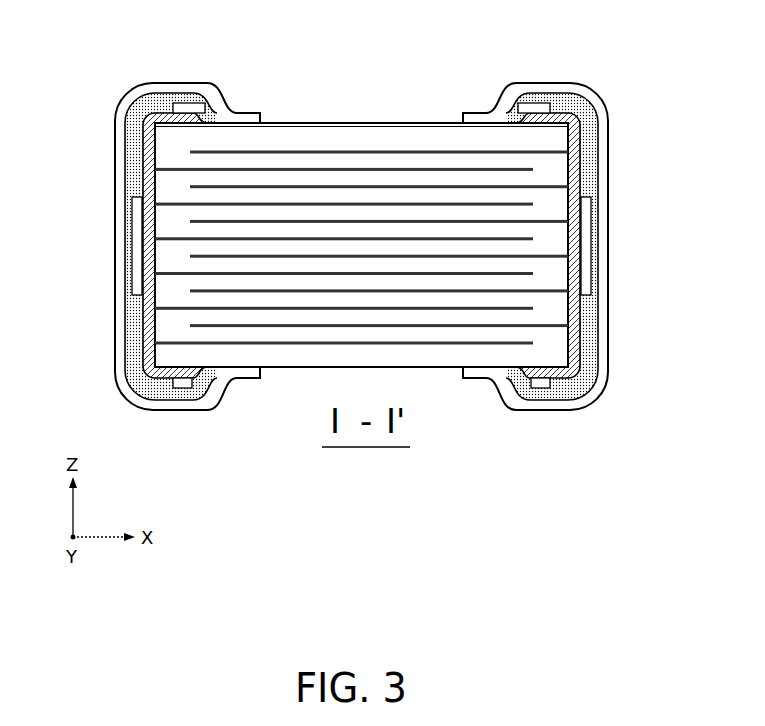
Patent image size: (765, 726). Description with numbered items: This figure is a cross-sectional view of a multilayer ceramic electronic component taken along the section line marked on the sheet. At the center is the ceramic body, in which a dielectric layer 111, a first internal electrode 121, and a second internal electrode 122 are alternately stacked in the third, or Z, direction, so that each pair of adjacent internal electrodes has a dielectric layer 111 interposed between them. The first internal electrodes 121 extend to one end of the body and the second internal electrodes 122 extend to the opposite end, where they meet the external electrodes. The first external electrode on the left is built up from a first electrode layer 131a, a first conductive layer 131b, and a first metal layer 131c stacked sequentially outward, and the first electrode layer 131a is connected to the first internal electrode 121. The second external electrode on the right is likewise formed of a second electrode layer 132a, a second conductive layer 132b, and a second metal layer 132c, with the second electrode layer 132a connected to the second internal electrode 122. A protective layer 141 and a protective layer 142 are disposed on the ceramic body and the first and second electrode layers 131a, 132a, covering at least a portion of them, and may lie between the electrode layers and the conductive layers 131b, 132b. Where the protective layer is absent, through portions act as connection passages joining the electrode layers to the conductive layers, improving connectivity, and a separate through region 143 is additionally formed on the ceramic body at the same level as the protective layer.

The dielectric layer 111 is at (198, 228).
The first internal electrode 121 is at (152, 177).
The second internal electrode 122 is at (190, 150).
The first electrode layer 131a is at (146, 268).
The first conductive layer 131b is at (126, 310).
The first metal layer 131c is at (118, 357).
The second electrode layer 132a is at (577, 130).
The second conductive layer 132b is at (596, 165).
The second metal layer 132c is at (604, 205).
The protective layer 141 is at (184, 388).
The protective layer 142 is at (588, 290).
The through region 143 is at (366, 122).